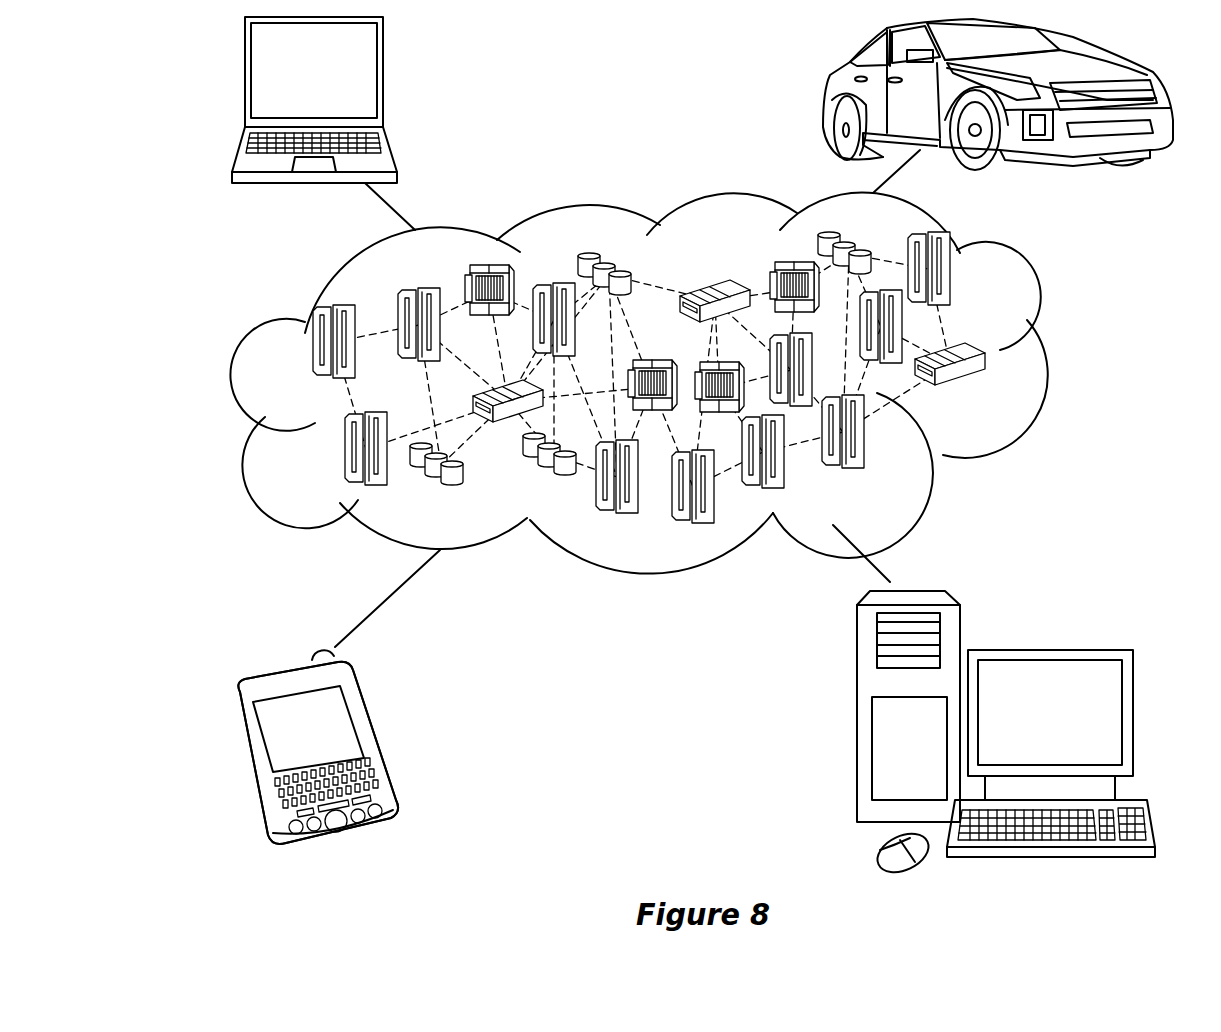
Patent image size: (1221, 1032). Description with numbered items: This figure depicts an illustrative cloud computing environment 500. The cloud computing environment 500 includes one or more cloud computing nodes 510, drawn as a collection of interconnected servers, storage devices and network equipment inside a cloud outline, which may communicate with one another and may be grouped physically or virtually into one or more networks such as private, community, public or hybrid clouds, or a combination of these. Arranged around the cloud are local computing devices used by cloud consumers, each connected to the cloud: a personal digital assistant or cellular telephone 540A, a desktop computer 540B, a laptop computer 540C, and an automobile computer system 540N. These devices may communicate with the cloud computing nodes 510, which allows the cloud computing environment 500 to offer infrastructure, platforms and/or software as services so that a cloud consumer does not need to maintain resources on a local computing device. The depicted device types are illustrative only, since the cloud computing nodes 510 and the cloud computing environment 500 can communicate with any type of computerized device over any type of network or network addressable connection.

The cloud computing environment 500 is at (1047, 355).
The cloud computing nodes 510 is at (988, 385).
The personal digital assistant (PDA) or cellular telephone 540A is at (375, 742).
The desktop computer 540B is at (1047, 648).
The laptop computer 540C is at (383, 80).
The automobile computer system 540N is at (828, 96).